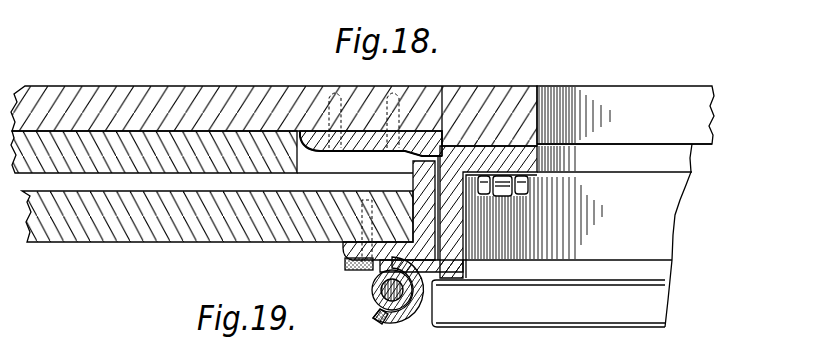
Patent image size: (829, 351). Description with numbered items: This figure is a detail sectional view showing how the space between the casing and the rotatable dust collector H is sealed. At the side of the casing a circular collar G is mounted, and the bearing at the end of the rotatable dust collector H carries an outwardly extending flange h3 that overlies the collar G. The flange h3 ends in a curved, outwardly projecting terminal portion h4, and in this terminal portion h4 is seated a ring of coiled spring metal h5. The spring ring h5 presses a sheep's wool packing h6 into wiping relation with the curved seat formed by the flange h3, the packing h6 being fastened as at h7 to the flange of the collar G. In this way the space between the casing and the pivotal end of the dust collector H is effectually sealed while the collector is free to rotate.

The rotatable dust collector H is at (158, 231).
The circular collar G is at (343, 256).
The outwardly extending flange h3 is at (437, 286).
The curved outwardly projecting terminal portion h4 is at (384, 324).
The ring of coiled spring metal h5 is at (433, 305).
The sheep's wool packing h6 is at (384, 307).
The fastening of the packing h7 is at (362, 273).